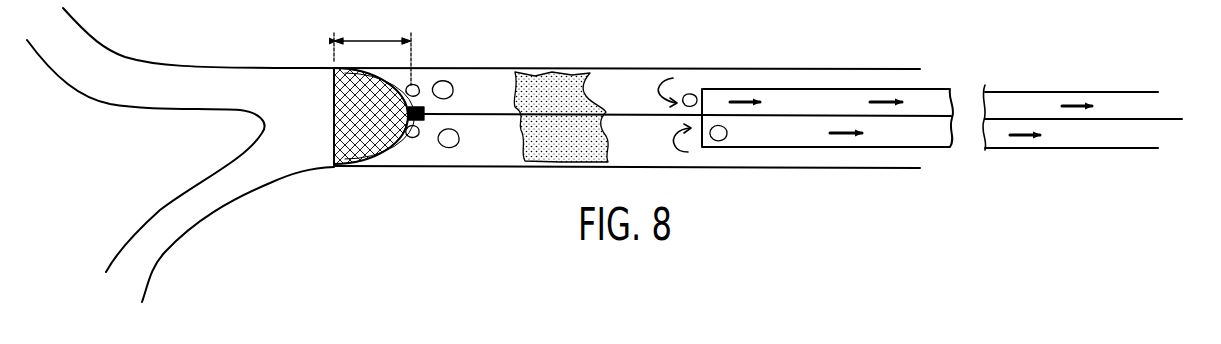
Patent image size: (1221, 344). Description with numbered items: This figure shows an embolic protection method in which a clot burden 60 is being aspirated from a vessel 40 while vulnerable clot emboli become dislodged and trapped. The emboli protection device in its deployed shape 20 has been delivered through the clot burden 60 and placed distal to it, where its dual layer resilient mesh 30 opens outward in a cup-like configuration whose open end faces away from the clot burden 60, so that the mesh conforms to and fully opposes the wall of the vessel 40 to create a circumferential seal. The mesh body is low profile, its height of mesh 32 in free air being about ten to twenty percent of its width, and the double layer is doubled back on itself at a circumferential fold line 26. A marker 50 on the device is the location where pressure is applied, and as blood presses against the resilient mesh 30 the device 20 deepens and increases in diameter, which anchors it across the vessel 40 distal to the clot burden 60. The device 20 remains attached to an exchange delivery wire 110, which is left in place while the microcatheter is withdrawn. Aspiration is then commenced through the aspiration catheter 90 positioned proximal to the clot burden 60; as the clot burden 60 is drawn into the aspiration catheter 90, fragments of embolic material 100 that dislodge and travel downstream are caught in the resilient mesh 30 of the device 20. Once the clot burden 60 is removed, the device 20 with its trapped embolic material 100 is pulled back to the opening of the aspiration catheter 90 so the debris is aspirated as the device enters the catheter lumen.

The device in deployed shape 20 is at (348, 113).
The circumferential fold line 26 is at (333, 141).
The dual layer resilient mesh 30 is at (372, 166).
The height of mesh 32 is at (360, 40).
The vessel 40 is at (481, 67).
The marker 50 is at (421, 120).
The clot burden 60 is at (549, 82).
The aspiration catheter 90 is at (782, 148).
The embolic material 100 is at (439, 80).
The exchange delivery wire 110 is at (481, 118).